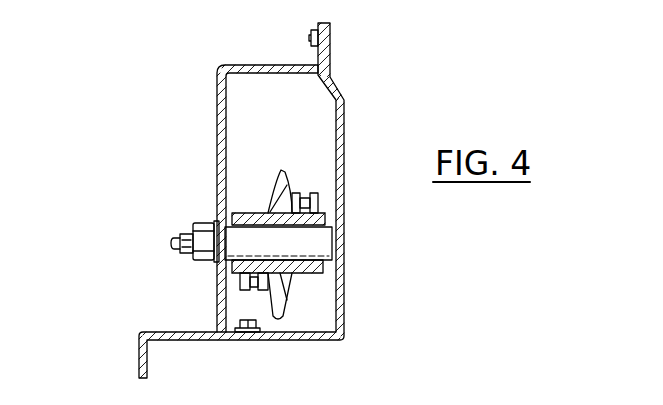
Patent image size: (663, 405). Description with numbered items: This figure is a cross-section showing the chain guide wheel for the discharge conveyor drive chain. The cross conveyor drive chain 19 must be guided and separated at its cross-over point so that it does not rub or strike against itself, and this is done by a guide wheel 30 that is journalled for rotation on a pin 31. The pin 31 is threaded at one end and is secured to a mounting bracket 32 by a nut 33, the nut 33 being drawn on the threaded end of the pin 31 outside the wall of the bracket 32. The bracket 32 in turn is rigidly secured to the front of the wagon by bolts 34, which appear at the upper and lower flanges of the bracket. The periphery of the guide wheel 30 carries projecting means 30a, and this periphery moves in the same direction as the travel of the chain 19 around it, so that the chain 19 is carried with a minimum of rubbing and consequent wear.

The cross conveyor drive chain 19 is at (306, 192).
The guide wheel 30 is at (249, 212).
The projecting means 30a is at (270, 178).
The pin 31 is at (322, 243).
The mounting bracket 32 is at (216, 105).
The nut 33 is at (205, 221).
The bolts 34 is at (309, 37).